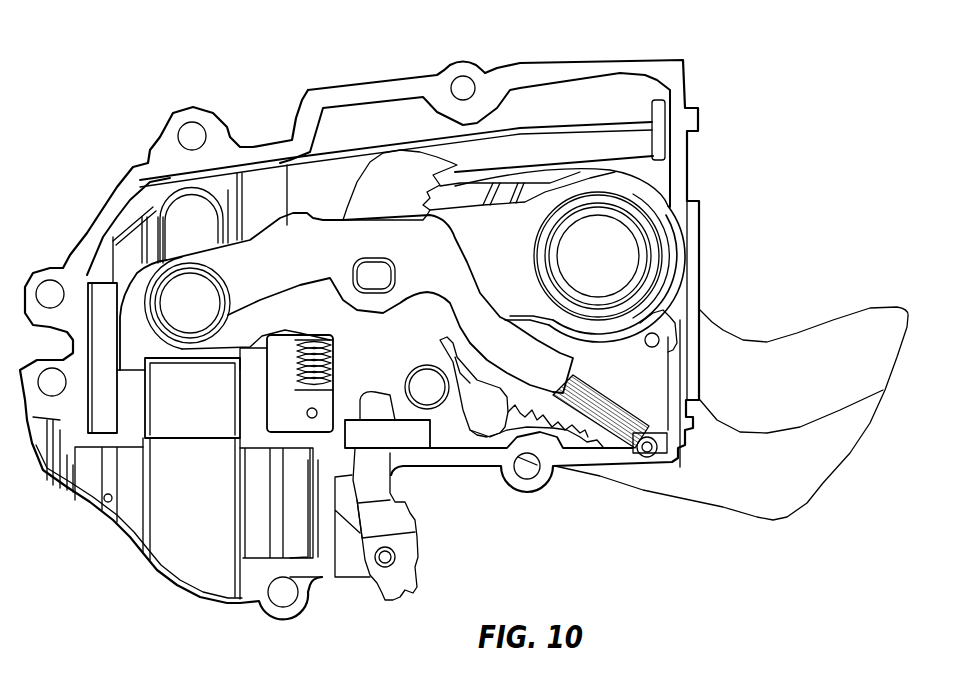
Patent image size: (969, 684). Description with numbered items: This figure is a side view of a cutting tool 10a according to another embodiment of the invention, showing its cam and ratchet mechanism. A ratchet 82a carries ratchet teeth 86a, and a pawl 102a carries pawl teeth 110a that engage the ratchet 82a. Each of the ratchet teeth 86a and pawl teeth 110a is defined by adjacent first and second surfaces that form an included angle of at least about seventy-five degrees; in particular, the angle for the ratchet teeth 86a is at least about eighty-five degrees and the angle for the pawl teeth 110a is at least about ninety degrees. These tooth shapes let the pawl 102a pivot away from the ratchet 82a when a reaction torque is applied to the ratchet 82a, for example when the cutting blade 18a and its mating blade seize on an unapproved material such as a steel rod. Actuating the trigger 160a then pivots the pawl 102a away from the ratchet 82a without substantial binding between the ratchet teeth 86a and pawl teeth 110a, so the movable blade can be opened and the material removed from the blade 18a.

The tool 10a is at (755, 136).
The cutting blade 18a is at (797, 475).
The ratchet 82a is at (645, 387).
The ratchet teeth 86a is at (581, 430).
The pawl 102a is at (405, 172).
The pawl teeth 110a is at (458, 172).
The trigger 160a is at (437, 547).